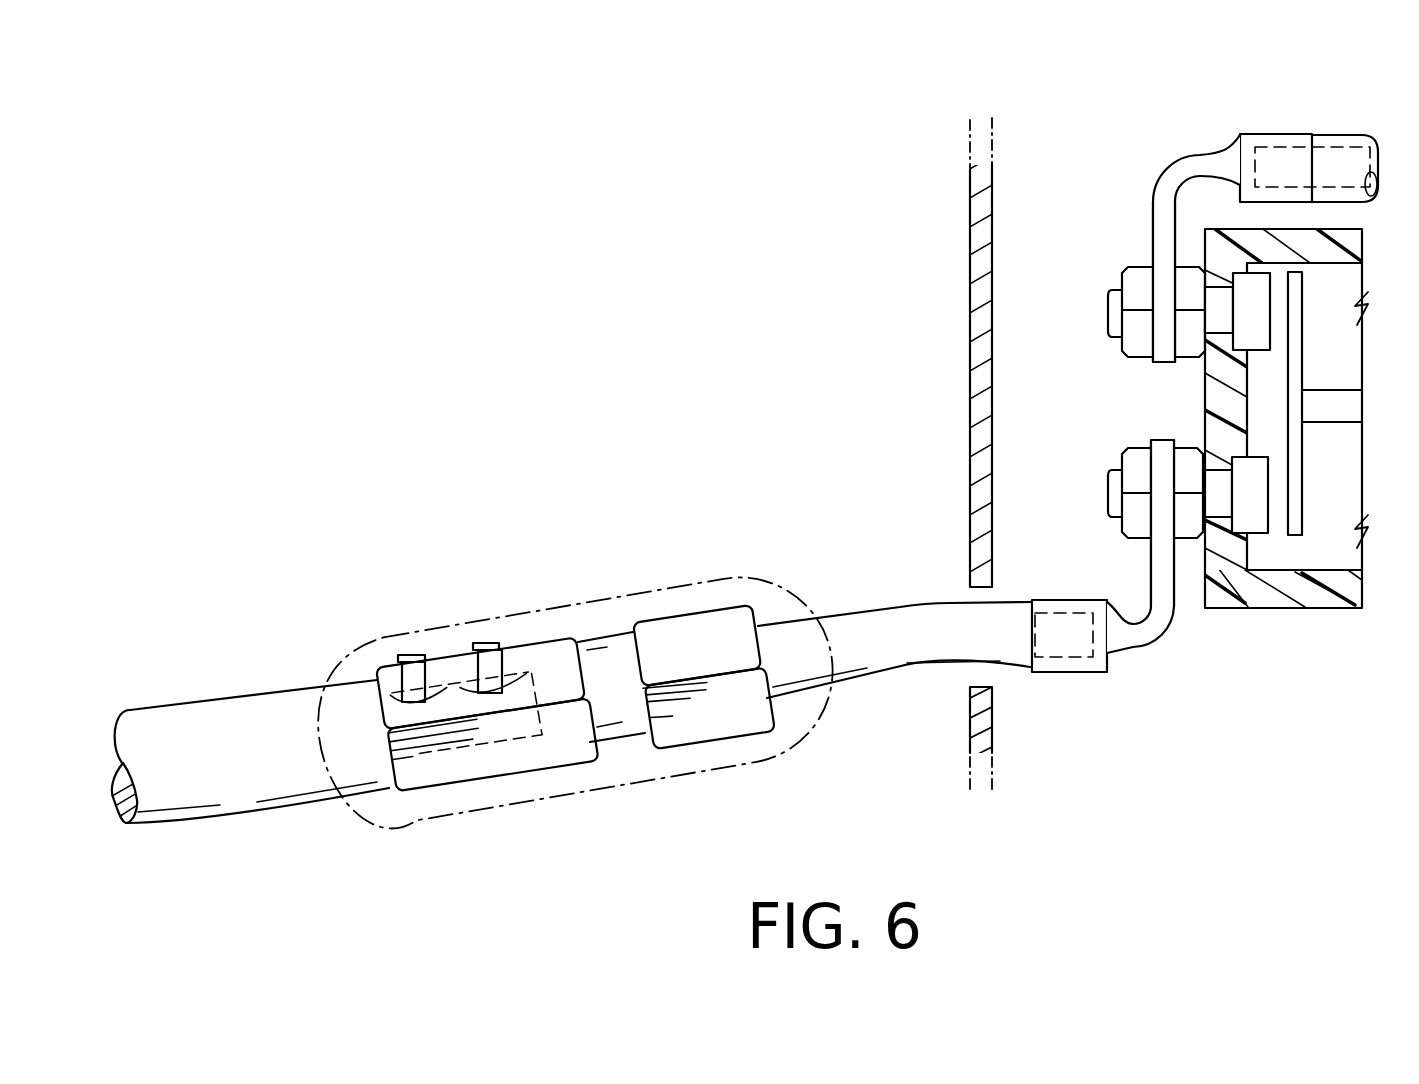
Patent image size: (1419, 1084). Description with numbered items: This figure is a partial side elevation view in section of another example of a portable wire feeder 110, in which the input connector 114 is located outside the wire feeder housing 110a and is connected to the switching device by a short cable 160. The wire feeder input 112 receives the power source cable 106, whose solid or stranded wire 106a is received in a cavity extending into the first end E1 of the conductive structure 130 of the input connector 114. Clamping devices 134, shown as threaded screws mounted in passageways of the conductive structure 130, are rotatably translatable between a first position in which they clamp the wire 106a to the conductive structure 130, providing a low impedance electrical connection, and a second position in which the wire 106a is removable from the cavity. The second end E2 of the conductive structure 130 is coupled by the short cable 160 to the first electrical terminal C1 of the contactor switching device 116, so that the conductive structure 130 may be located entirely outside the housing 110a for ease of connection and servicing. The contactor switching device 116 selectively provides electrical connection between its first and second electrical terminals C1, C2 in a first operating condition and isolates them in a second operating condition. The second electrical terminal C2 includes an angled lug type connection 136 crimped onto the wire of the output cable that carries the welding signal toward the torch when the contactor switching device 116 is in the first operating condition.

The power source cable 106 is at (197, 717).
The wire of power source cable 106a is at (475, 657).
The portable wire feeder 110 is at (969, 223).
The wire feeder housing 110a is at (973, 478).
The wire feeder input 112 is at (1021, 323).
The input connector 114 is at (460, 786).
The contactor switching device 116 is at (1281, 608).
The conductive structure 130 is at (542, 777).
The clamping devices 134 is at (410, 653).
The angled lug type connection 136 is at (1093, 675).
The short cable 160 is at (906, 600).
The first end E1 is at (402, 803).
The second end E2 is at (764, 742).
The first electrical terminal C1 is at (1255, 523).
The second electrical terminal C2 is at (1262, 310).